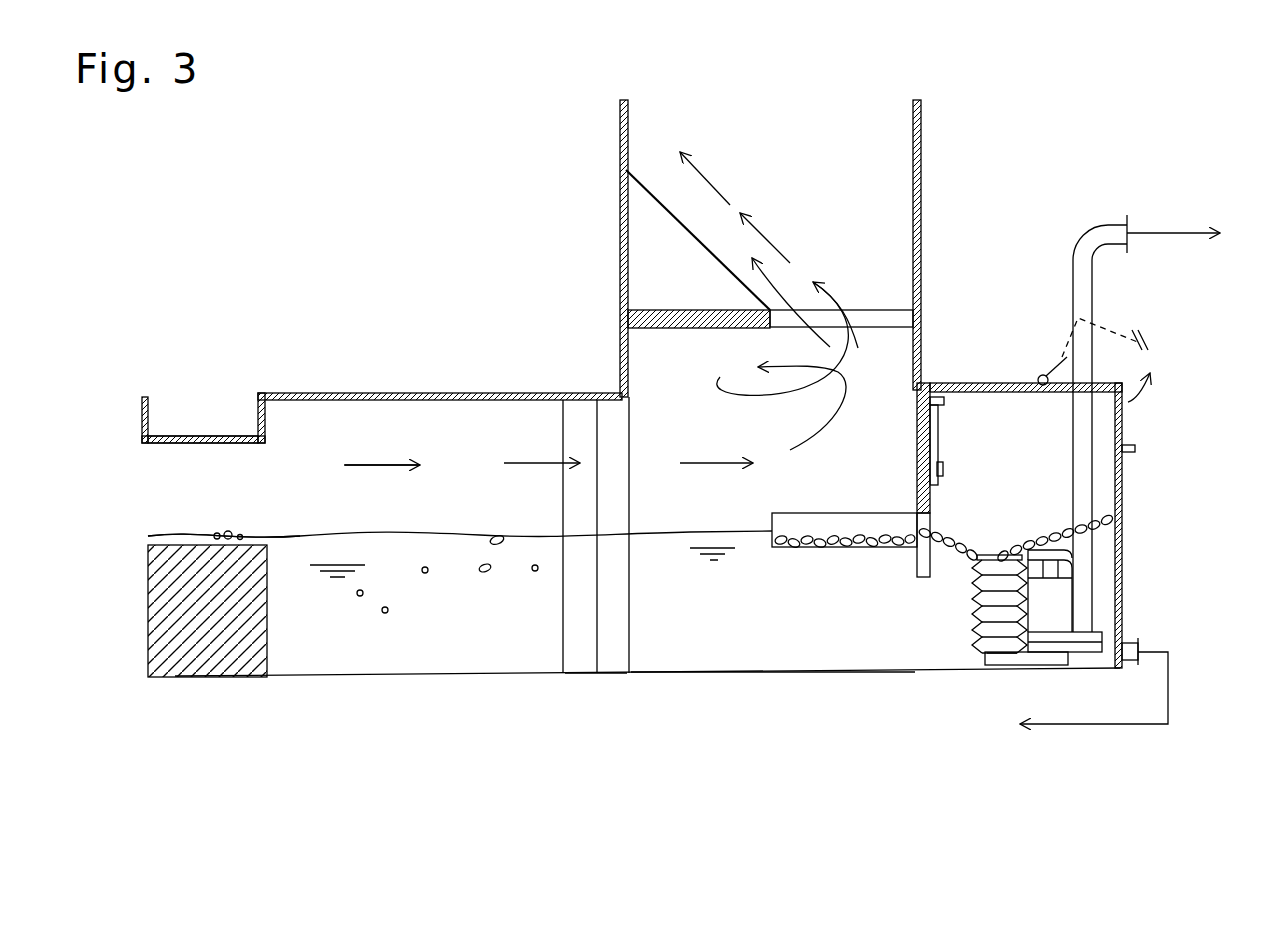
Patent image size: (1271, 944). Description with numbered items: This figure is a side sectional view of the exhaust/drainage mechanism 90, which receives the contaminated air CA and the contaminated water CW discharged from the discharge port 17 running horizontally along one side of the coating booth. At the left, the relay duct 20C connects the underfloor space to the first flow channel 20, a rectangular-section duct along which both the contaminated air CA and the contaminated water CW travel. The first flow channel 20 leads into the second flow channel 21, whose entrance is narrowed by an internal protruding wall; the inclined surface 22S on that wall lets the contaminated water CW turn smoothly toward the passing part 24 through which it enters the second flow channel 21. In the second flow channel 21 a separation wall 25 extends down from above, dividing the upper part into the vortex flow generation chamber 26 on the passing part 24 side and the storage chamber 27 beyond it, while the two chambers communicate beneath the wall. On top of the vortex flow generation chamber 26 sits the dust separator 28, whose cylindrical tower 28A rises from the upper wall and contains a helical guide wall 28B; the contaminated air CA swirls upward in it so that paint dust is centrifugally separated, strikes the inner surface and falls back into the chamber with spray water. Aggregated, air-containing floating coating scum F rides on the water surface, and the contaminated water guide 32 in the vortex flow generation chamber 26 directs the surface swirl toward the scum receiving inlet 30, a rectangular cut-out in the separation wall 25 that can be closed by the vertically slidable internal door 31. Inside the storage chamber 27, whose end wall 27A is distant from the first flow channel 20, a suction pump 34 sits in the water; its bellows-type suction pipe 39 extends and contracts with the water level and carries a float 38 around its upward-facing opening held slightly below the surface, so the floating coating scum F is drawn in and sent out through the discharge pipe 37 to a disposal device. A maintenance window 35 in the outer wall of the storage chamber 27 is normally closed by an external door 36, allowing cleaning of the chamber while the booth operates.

The discharge port 17 is at (146, 450).
The first flow channel 20 is at (372, 406).
The relay duct 20C is at (178, 436).
The second flow channel 21 is at (690, 648).
The inclined surface 22S is at (575, 648).
The passing part 24 is at (620, 612).
The separation wall 25 is at (916, 378).
The vortex flow generation chamber 26 is at (738, 565).
The storage chamber 27 is at (1103, 489).
The end wall 27A is at (1120, 527).
The dust separator 28 is at (538, 122).
The cylindrical tower 28A is at (620, 145).
The helical guide wall 28B is at (657, 201).
The scum receiving inlet 30 is at (920, 580).
The internal door 31 is at (937, 430).
The contaminated water guide 32 is at (826, 550).
The suction pump 34 is at (1045, 617).
The maintenance window 35 is at (1137, 450).
The external door 36 is at (1060, 358).
The discharge pipe 37 is at (1085, 597).
The float 38 is at (977, 567).
The suction pipe 39 is at (1000, 597).
The exhaust/drainage mechanism 90 is at (1123, 168).
The floating coating scum F is at (830, 537).
The contaminated air CA is at (388, 470).
The contaminated water CW is at (360, 652).